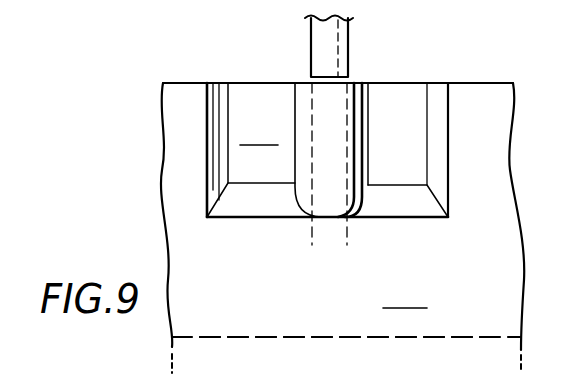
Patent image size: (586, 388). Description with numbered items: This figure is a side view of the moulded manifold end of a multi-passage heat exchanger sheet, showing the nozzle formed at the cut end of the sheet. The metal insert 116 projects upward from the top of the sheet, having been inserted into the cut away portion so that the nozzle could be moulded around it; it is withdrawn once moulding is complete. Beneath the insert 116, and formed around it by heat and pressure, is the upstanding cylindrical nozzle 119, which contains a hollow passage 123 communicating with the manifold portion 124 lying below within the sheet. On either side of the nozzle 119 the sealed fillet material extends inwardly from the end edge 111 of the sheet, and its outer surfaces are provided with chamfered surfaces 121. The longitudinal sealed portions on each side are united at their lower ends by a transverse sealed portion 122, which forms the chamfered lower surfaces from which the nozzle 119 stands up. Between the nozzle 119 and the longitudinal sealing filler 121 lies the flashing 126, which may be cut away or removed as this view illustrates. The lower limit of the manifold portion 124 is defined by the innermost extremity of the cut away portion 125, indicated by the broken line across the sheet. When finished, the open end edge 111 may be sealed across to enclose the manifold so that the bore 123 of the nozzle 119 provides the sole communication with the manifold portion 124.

The end edge 111 is at (478, 83).
The metal insert 116 is at (331, 44).
The cylindrical nozzle 119 is at (340, 175).
The chamfered surfaces 121 is at (223, 150).
The transverse sealed portion 122 is at (262, 197).
The hollow passage 123 is at (345, 107).
The manifold portion 124 is at (346, 307).
The innermost extremity of the cut away portion 125 is at (330, 337).
The flashing 126 is at (253, 133).